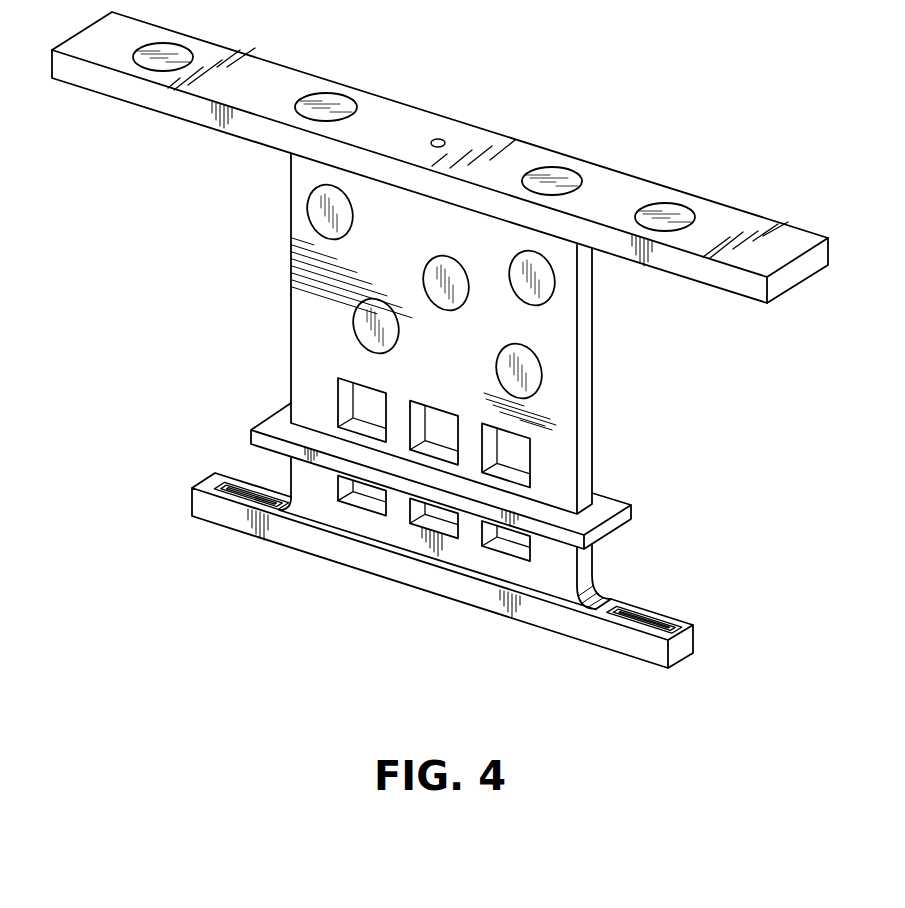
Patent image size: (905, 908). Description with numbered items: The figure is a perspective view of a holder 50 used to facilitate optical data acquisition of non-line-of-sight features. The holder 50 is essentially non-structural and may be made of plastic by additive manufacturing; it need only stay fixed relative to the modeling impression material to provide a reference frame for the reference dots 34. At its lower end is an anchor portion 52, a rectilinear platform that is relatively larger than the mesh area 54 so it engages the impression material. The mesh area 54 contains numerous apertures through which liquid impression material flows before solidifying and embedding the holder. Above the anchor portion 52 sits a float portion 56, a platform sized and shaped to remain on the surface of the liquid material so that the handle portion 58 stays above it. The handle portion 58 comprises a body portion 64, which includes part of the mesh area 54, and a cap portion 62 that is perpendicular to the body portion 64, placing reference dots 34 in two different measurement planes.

The reference dots 34 is at (328, 100).
The holder 50 is at (440, 340).
The anchor portion 52 is at (686, 609).
The mesh area 54 is at (445, 544).
The float portion 56 is at (616, 494).
The handle portion 58 is at (452, 334).
The cap portion 62 is at (440, 157).
The body portion 64 is at (313, 313).